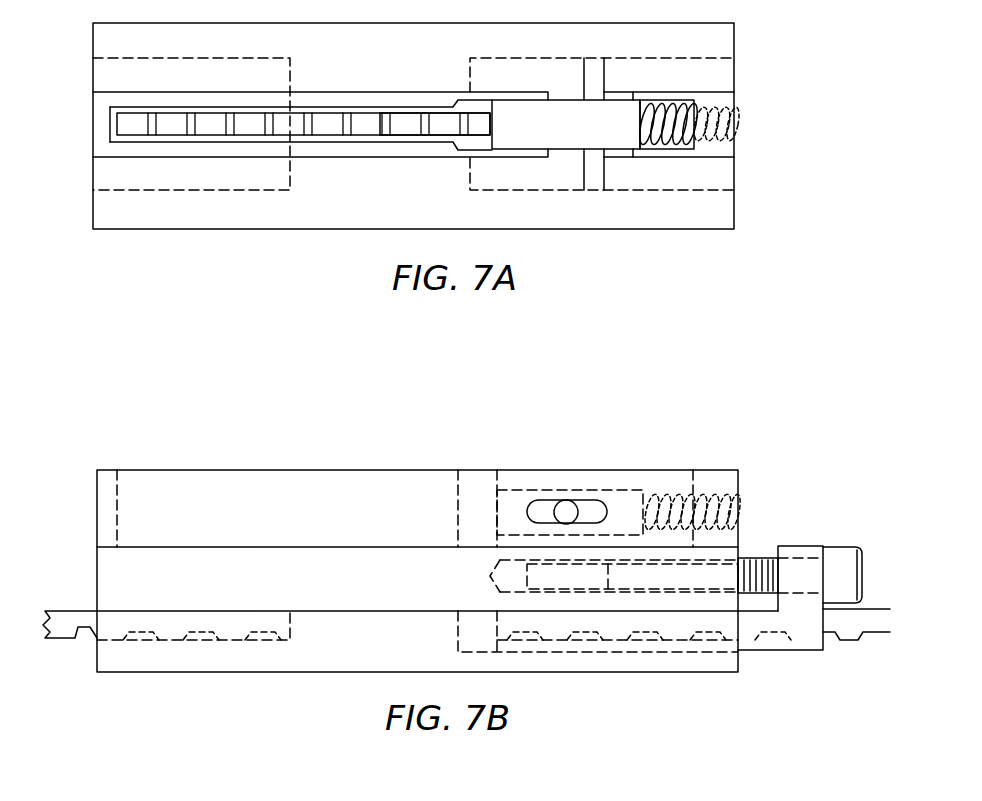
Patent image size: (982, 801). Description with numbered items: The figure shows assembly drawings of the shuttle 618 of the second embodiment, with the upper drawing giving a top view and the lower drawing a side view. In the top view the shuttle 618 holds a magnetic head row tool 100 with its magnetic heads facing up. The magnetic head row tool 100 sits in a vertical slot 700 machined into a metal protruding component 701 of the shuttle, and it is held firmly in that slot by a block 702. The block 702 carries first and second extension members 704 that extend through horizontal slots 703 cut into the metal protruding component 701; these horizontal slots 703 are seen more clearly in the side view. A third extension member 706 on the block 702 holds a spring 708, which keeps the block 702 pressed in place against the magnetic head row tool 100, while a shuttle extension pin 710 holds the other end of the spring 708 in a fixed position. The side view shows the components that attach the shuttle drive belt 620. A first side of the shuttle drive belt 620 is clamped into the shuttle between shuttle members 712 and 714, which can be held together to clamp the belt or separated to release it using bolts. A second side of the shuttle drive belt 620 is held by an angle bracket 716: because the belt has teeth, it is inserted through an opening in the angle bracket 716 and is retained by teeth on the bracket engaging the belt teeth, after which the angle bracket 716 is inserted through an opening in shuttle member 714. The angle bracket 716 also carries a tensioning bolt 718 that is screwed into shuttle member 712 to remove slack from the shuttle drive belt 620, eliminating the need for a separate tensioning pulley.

In FIG. 7A, the vertical slot 700 is at (303, 101).
In FIG. 7A, the metal protruding component 701 is at (301, 102).
In FIG. 7A, the magnetic head row tool 100 is at (435, 95).
In FIG. 7A, the block 702 is at (556, 162).
In FIG. 7B, the block 702 is at (593, 484).
In FIG. 7B, the horizontal slots 703 is at (545, 478).
In FIG. 7A, the first and second extension members 704 is at (573, 127).
In FIG. 7B, the first and second extension members 704 is at (585, 479).
In FIG. 7A, the third extension member 706 is at (650, 162).
In FIG. 7A, the spring 708 is at (683, 163).
In FIG. 7A, the shuttle extension pin 710 is at (750, 120).
In FIG. 7B, the shuttle extension pin 710 is at (724, 499).
In FIG. 7A, the shuttle 618 is at (682, 272).
In FIG. 7B, the shuttle member 712 is at (108, 577).
In FIG. 7B, the shuttle member 714 is at (193, 664).
In FIG. 7B, the angle bracket 716 is at (673, 625).
In FIG. 7B, the tensioning bolt 718 is at (857, 558).
In FIG. 7B, the shuttle drive belt 620 is at (466, 660).